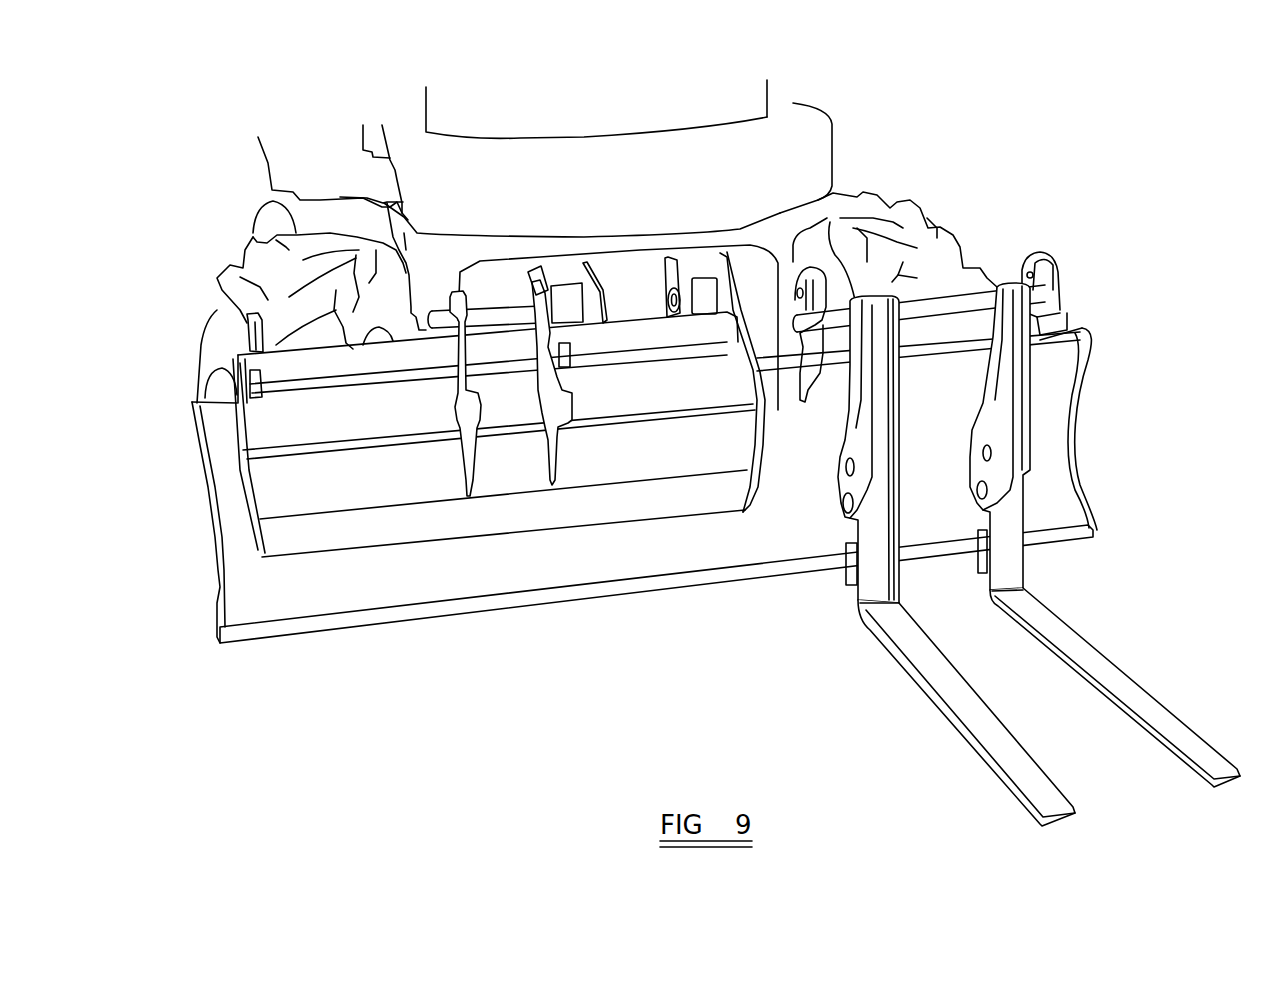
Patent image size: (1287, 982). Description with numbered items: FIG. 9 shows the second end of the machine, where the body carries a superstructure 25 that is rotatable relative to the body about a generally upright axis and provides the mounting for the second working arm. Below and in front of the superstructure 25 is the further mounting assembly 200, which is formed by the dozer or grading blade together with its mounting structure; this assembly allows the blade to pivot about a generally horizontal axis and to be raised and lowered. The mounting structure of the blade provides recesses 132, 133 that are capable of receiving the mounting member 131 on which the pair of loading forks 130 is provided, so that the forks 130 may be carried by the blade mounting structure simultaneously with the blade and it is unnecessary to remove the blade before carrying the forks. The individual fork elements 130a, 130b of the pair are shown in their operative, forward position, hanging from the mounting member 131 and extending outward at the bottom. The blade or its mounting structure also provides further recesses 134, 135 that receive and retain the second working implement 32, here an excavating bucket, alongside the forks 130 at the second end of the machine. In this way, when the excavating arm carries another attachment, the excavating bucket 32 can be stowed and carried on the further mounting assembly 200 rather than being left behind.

The superstructure 25 is at (842, 147).
The second working implement 32 is at (333, 537).
The loading forks 130 is at (1031, 554).
The fork element 130a is at (947, 685).
The fork element 130b is at (1115, 685).
The mounting member 131 is at (941, 303).
The recess 132 is at (833, 223).
The recess 133 is at (1032, 260).
The further recess 134 is at (217, 310).
The further recess 135 is at (560, 300).
The further mounting assembly 200 is at (778, 405).